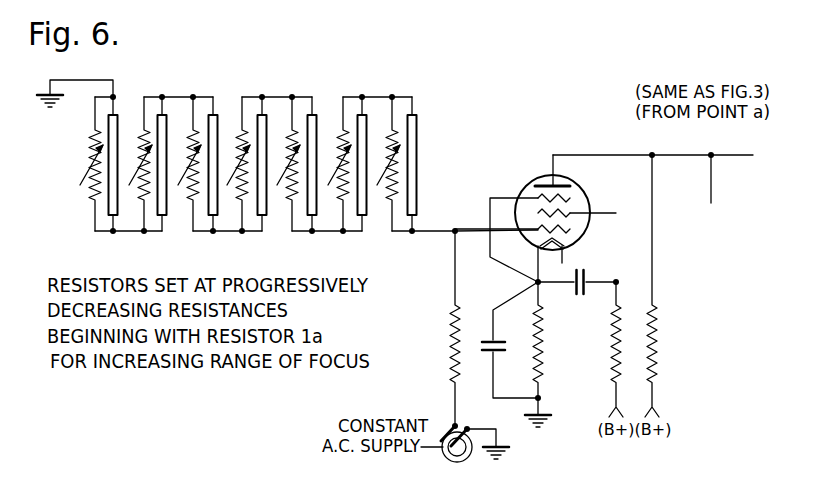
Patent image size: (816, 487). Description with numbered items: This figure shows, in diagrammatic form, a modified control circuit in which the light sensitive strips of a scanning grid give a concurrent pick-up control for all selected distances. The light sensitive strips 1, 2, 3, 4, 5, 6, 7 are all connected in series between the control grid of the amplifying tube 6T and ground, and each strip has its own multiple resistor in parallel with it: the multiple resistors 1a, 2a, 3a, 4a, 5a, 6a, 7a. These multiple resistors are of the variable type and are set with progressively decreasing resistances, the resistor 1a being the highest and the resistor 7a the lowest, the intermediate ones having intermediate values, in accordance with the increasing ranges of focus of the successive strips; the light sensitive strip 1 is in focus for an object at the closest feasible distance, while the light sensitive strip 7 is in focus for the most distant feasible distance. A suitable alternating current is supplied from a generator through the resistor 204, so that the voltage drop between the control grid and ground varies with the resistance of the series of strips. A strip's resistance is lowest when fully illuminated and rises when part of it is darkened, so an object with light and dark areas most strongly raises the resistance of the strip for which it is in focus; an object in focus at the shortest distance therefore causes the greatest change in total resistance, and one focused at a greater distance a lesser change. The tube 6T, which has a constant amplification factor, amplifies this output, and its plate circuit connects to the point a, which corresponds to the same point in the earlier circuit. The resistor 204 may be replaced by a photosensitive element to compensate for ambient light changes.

The light sensitive strip 1 is at (421, 126).
The light sensitive strip 2 is at (371, 126).
The light sensitive strip 3 is at (321, 126).
The light sensitive strip 4 is at (271, 126).
The light sensitive strip 5 is at (222, 126).
The light sensitive strip 6 is at (171, 126).
The light sensitive strip 7 is at (122, 126).
The multiple resistor 1a is at (393, 195).
The multiple resistor 2a is at (344, 195).
The multiple resistor 3a is at (293, 195).
The multiple resistor 4a is at (243, 195).
The multiple resistor 5a is at (194, 195).
The multiple resistor 6a is at (145, 195).
The multiple resistor 7a is at (96, 195).
The amplifying tube 6T is at (530, 174).
The resistor 204 is at (455, 324).
The connection point a is at (712, 155).